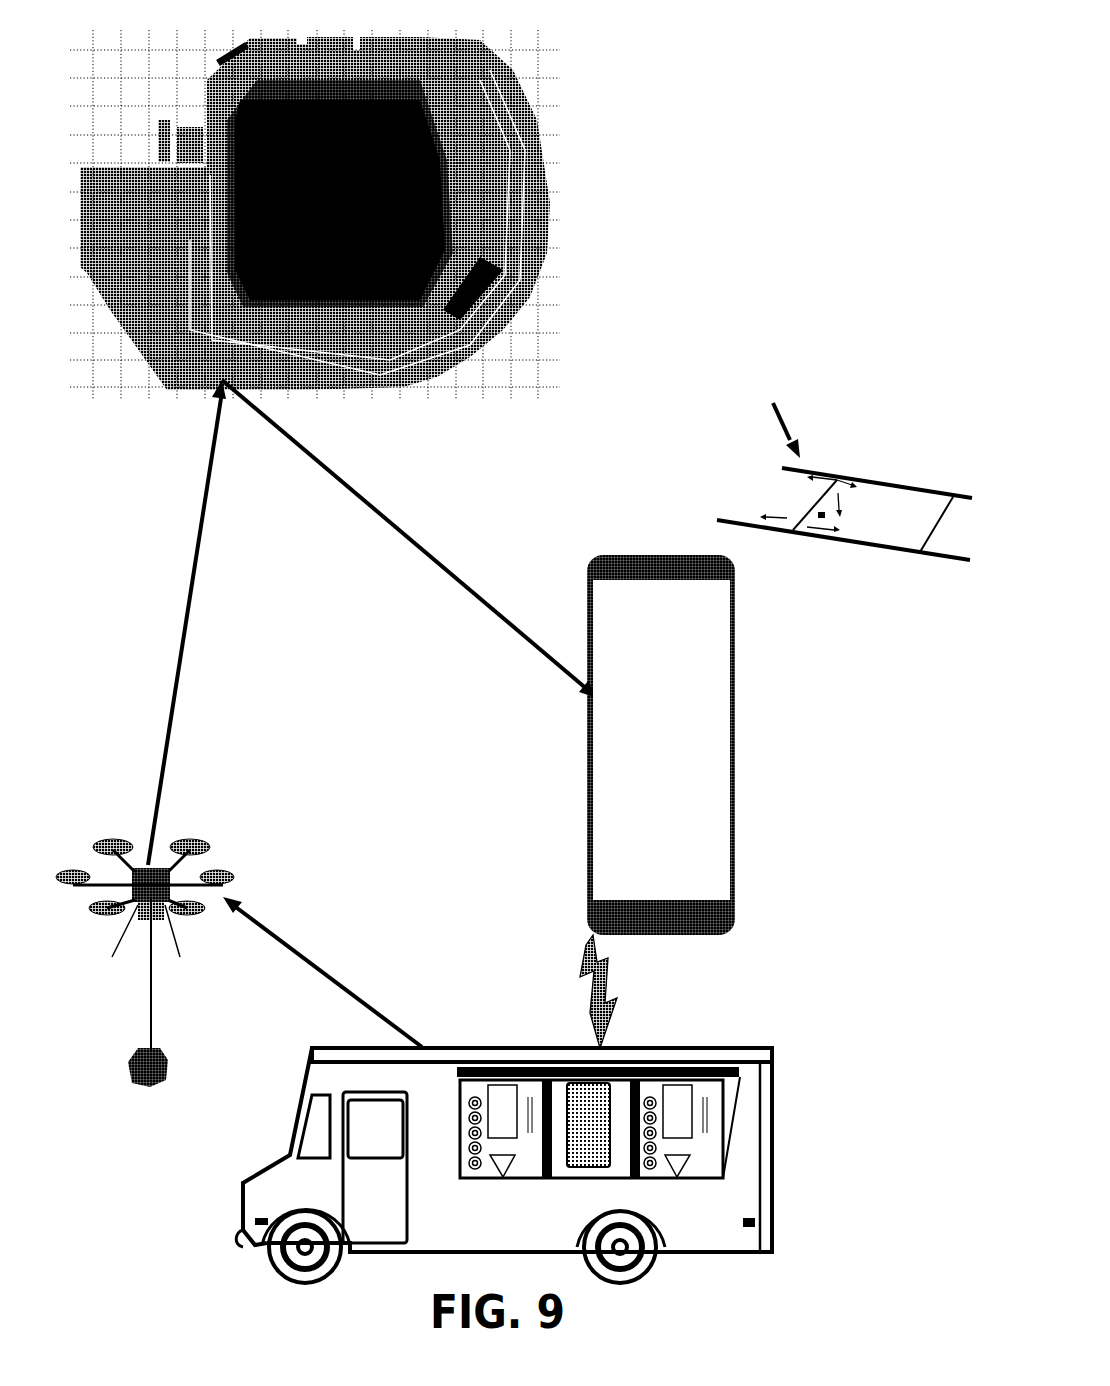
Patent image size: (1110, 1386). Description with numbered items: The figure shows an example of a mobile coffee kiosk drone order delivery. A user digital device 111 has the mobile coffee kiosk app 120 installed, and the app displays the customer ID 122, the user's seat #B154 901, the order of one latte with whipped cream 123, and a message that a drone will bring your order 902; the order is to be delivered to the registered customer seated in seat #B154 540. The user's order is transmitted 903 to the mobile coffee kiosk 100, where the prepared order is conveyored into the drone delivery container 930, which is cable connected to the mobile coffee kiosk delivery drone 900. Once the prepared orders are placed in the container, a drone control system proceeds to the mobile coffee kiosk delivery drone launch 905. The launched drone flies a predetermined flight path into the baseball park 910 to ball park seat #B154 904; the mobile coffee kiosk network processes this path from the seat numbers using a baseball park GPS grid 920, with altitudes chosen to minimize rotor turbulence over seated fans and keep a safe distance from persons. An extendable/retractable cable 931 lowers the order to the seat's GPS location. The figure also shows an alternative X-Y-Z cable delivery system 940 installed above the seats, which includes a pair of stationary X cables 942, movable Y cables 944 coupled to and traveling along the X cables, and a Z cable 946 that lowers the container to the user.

The mobile coffee kiosk 100 is at (777, 1063).
The user digital device 111 is at (590, 580).
The mobile coffee kiosk app 120 is at (613, 622).
The customer ID 122 is at (605, 675).
The order 123 is at (618, 762).
The registered customer seated in seat #B154 540 is at (512, 853).
The mobile coffee kiosk delivery drone 900 is at (227, 878).
The user's seat #B154 901 is at (603, 710).
The message that a drone will bring your order 902 is at (615, 828).
The order transmission 903 is at (592, 1000).
The flight path to ball park seat #B154 904 is at (222, 380).
The mobile coffee kiosk delivery drone launch 905 is at (307, 957).
The baseball park 910 is at (360, 122).
The baseball park GPS grid 920 is at (540, 96).
The drone delivery container 930 is at (160, 1067).
The extendable/retractable cable 931 is at (150, 995).
The X-Y-Z cable delivery system 940 is at (776, 415).
The stationary X cables 942 is at (887, 480).
The movable Y cables 944 is at (810, 510).
The Z cable 946 is at (837, 480).